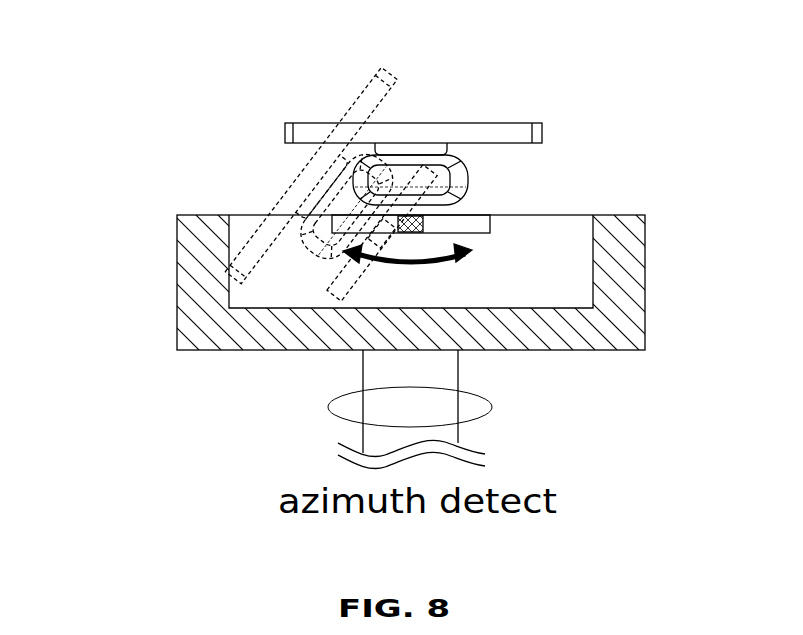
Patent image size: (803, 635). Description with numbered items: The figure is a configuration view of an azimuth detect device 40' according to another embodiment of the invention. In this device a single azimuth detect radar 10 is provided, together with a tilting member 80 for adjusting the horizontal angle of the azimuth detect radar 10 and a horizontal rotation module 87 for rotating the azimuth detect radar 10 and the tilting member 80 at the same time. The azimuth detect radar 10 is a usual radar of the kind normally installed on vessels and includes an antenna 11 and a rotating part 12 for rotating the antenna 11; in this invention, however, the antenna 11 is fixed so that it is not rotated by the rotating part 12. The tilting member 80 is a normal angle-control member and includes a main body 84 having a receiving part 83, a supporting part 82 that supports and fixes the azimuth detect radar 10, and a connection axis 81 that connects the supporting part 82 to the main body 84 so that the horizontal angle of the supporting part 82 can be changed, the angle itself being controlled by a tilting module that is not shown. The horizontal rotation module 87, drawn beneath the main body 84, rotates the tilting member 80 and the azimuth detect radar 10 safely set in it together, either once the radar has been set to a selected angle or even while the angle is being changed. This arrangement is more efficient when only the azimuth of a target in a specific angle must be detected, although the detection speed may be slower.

The azimuth detect radar 10 is at (443, 106).
The antenna 11 is at (451, 123).
The rotating part 12 is at (510, 128).
The azimuth detect device 40' is at (275, 192).
The tilting member 80 is at (193, 526).
The connection axis 81 is at (447, 205).
The supporting part 82 is at (466, 229).
The receiving part 83 is at (550, 298).
The main body 84 is at (638, 247).
The horizontal rotation module 87 is at (452, 387).